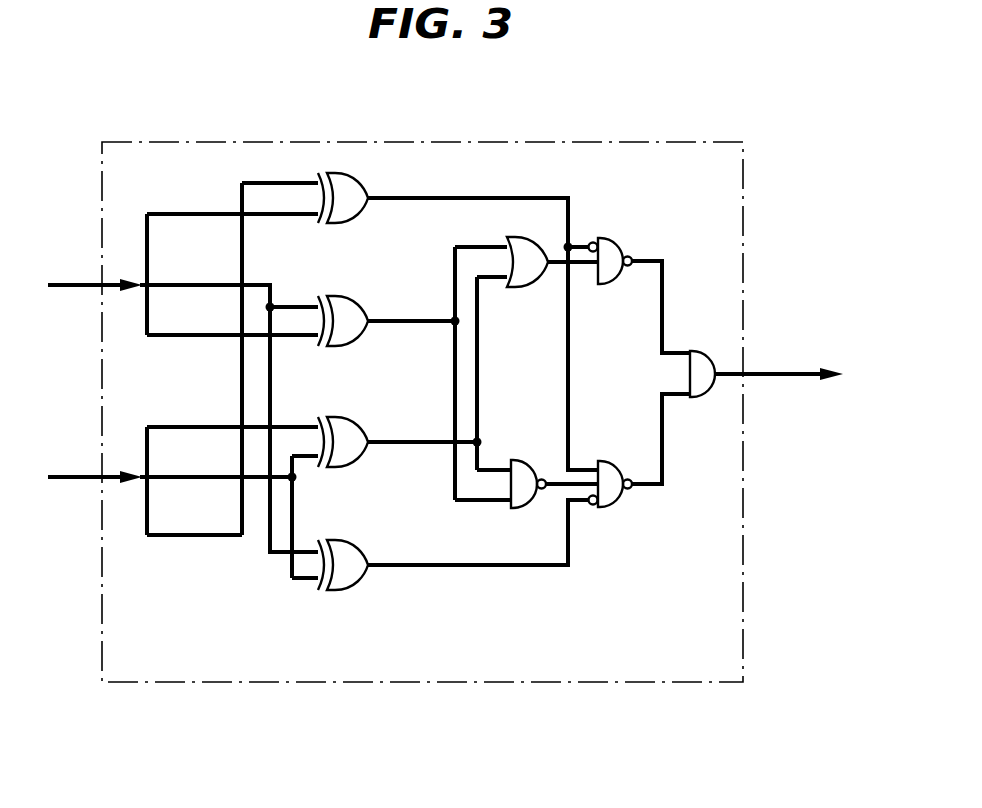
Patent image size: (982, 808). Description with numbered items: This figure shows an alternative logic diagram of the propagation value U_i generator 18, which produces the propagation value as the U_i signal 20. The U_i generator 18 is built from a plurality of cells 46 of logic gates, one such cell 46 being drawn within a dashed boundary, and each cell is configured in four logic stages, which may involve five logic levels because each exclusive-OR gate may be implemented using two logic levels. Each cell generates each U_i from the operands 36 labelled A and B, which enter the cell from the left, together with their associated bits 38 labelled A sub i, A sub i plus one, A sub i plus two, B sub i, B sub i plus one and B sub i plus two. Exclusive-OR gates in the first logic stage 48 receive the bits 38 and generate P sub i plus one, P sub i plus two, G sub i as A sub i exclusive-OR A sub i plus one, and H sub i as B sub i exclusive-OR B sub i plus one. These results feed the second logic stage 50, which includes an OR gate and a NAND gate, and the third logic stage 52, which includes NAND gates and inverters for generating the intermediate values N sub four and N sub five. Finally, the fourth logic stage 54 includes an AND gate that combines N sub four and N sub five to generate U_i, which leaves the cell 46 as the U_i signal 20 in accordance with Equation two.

The propagation value U_i generator 18 is at (780, 579).
The U_i signal 20 is at (756, 401).
The operands 36 is at (84, 320).
The bits 38 is at (192, 599).
The cells 46 is at (657, 682).
The first logic stage 48 is at (343, 599).
The second logic stage 50 is at (528, 589).
The third logic stage 52 is at (613, 524).
The fourth logic stage 54 is at (711, 414).